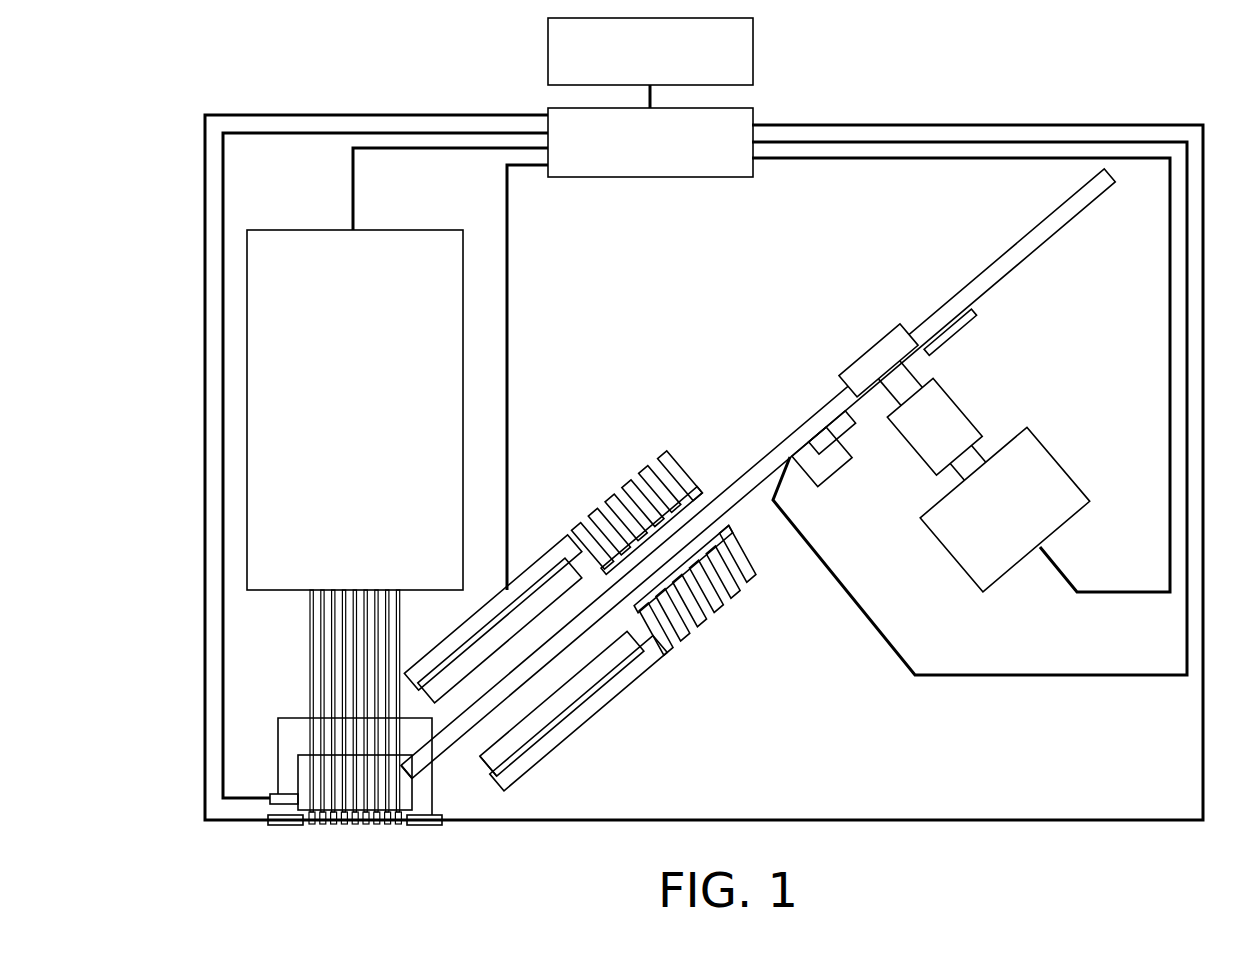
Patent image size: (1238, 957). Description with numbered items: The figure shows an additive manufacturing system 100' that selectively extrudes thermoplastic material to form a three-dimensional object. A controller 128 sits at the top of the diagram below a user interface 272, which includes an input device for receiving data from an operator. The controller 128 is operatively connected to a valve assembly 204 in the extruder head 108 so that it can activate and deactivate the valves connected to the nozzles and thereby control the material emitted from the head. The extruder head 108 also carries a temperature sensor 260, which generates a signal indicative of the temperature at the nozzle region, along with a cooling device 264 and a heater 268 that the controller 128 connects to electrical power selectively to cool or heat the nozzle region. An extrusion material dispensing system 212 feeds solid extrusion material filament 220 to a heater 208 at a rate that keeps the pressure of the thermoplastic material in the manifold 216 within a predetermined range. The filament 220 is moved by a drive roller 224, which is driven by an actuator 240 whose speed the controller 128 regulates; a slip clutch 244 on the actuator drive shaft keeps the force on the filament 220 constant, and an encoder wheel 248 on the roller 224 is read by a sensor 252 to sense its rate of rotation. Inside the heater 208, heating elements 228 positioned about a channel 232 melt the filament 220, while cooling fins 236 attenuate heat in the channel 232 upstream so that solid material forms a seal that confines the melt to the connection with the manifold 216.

The additive manufacturing system 100' is at (648, 467).
The user interface 272 is at (753, 50).
The controller 128 is at (650, 177).
The valve assembly 204 is at (305, 228).
The extruder head 108 is at (272, 710).
The temperature sensor 260 is at (272, 795).
The cooling device 264 is at (283, 828).
The heater 268 is at (420, 828).
The extrusion material dispensing system 212 is at (921, 600).
The extrusion material filament 220 is at (1088, 222).
The manifold 216 is at (432, 806).
The heating elements 228 is at (538, 570).
The heater 208 is at (575, 733).
The channel 232 is at (487, 712).
The cooling fins 236 is at (660, 455).
The drive roller 224 is at (866, 352).
The sensor 252 is at (823, 488).
The encoder wheel 248 is at (860, 420).
The slip clutch 244 is at (1070, 398).
The actuator 240 is at (1082, 443).